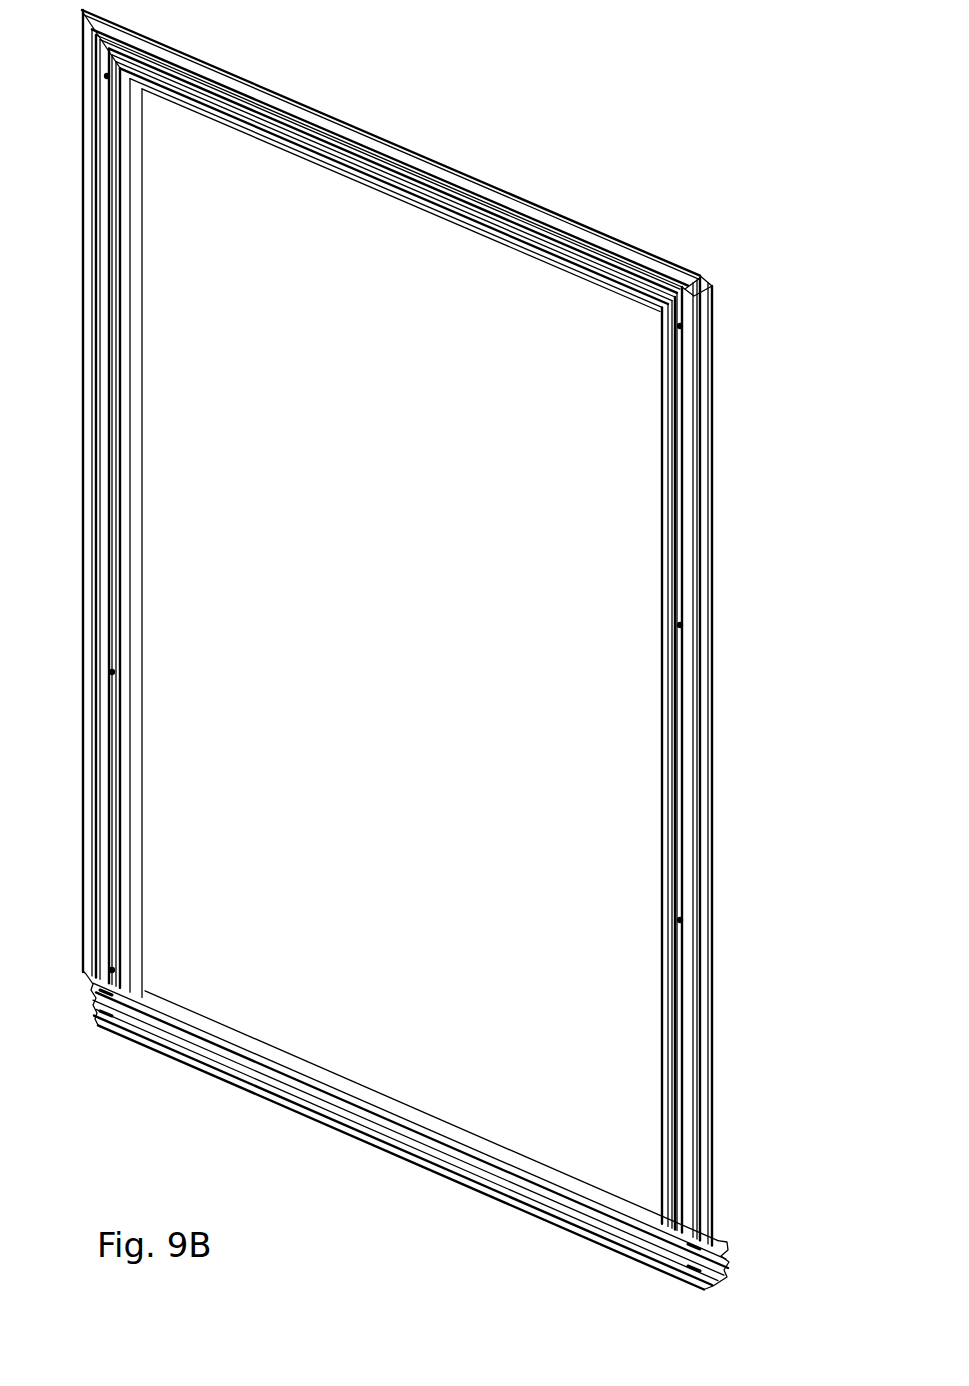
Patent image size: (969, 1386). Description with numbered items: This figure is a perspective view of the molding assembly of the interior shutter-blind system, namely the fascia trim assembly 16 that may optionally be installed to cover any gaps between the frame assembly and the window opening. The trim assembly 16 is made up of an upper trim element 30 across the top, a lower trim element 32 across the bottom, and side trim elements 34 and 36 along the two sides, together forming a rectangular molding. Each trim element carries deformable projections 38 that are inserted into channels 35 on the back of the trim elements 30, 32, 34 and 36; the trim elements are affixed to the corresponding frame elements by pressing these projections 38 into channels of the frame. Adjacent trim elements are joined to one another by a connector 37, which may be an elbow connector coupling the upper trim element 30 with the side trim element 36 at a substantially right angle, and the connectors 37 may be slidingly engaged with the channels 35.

The fascia trim assembly 16 is at (612, 103).
The upper trim element 30 is at (475, 178).
The lower trim element 32 is at (350, 1140).
The side trim element 34 is at (700, 875).
The channels 35 is at (622, 258).
The side trim element 36 is at (133, 617).
The connector 37 is at (685, 285).
The deformable projections 38 is at (107, 77).